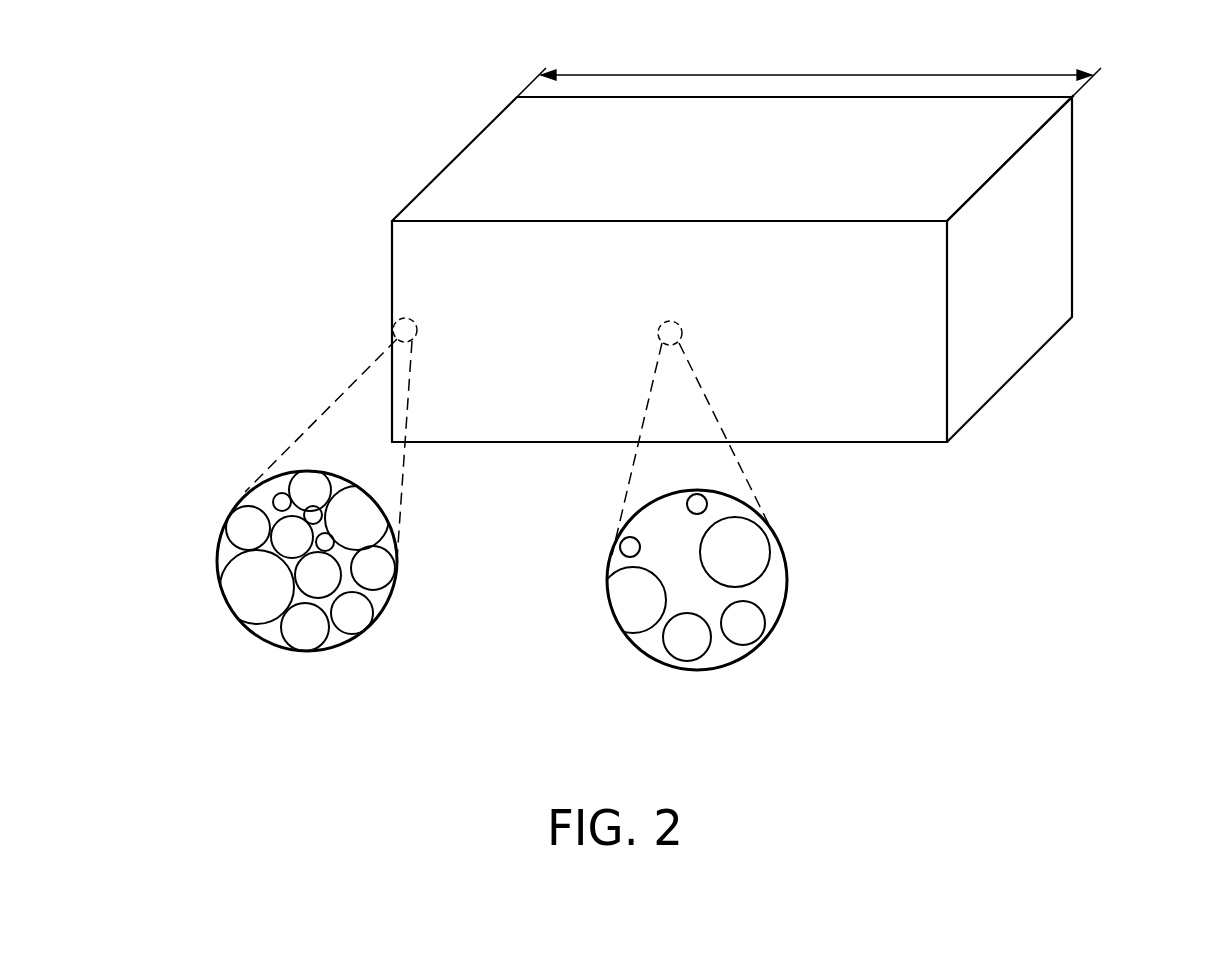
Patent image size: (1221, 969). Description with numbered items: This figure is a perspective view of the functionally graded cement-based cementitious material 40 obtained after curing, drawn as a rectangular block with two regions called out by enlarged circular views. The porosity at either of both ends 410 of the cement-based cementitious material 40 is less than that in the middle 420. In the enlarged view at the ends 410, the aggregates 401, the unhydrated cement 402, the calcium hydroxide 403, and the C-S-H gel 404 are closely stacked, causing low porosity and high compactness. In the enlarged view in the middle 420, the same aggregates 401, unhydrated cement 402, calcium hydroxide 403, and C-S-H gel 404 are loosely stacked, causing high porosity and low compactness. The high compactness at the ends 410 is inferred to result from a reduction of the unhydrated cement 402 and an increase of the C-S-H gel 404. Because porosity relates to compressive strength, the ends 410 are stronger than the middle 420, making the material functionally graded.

The cement-based cementitious material 40 is at (490, 152).
The ends 410 is at (402, 320).
The middle 420 is at (672, 318).
The aggregates 401 is at (367, 517).
The unhydrated cement 402 is at (307, 641).
The calcium hydroxide 403 is at (383, 568).
The C-S-H gel 404 is at (274, 503).